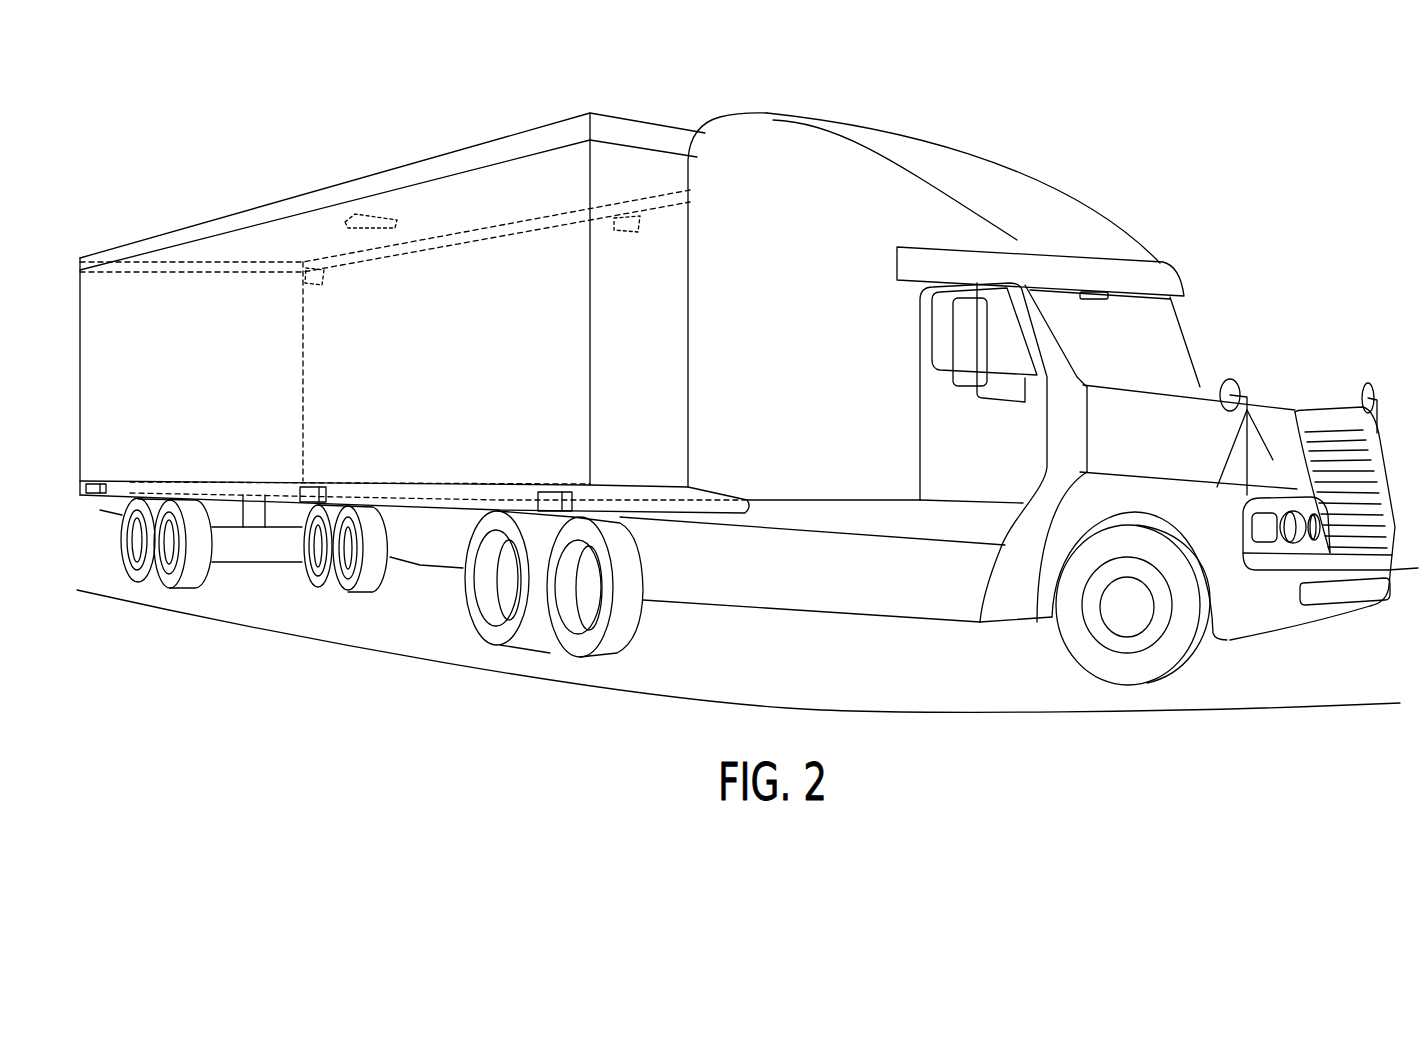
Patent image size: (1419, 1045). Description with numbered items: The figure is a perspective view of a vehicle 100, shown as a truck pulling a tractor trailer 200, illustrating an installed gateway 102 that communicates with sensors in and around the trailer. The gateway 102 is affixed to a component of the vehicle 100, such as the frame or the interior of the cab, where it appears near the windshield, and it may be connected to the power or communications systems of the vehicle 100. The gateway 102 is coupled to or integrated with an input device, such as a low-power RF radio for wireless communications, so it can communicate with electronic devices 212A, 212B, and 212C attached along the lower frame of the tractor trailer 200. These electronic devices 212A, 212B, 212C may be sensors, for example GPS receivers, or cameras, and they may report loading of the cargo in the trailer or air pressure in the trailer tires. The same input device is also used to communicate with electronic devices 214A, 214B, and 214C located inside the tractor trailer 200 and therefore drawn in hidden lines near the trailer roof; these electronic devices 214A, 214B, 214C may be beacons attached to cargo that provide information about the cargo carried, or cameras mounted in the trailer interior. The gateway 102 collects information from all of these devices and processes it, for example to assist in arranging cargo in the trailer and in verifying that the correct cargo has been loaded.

The vehicle 100 is at (1168, 265).
The gateway 102 is at (1110, 298).
The tractor trailer 200 is at (440, 150).
The electronic device 212A is at (96, 494).
The electronic device 212B is at (307, 502).
The electronic device 212C is at (548, 511).
The electronic device 214A is at (310, 268).
The electronic device 214B is at (360, 216).
The electronic device 214C is at (630, 215).